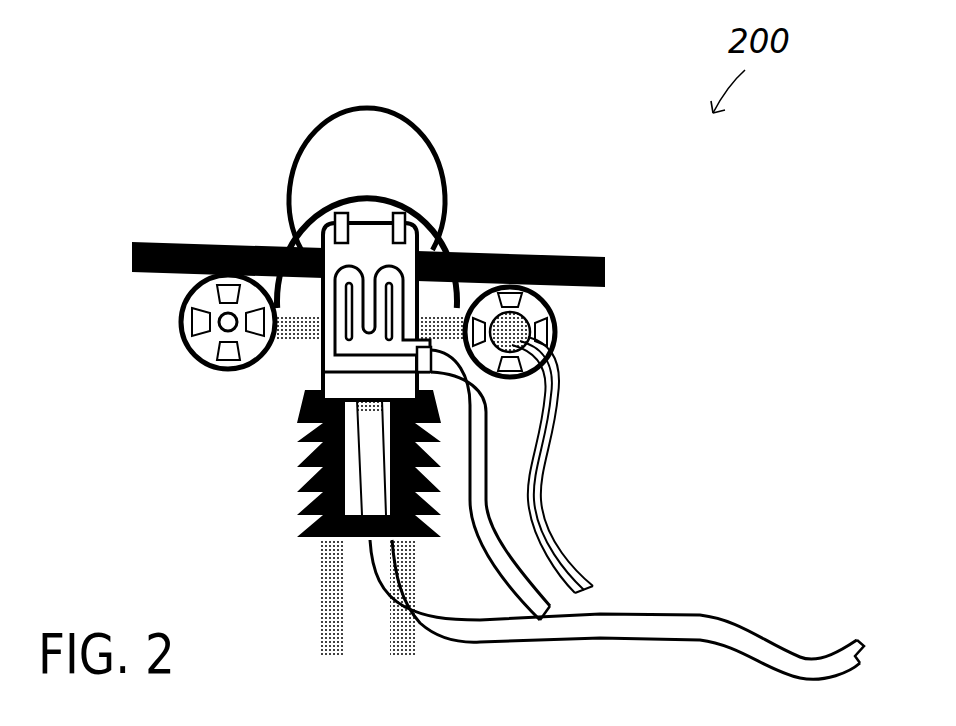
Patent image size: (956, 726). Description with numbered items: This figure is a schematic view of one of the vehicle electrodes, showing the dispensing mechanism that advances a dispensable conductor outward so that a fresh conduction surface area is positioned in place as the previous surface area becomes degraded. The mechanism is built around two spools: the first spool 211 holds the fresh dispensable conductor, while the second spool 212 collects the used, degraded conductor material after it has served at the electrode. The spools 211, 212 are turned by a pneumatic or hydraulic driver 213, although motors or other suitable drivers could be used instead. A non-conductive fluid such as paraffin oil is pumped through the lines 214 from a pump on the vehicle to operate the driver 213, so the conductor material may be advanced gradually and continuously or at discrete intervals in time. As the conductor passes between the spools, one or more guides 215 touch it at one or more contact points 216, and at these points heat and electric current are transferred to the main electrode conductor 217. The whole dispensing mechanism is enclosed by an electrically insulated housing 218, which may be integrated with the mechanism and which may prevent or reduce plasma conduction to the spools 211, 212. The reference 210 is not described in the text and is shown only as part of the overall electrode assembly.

The housing 210 is at (433, 237).
The first spool 211 is at (230, 350).
The second spool 212 is at (535, 308).
The pneumatic or hydraulic driver 213 is at (536, 333).
The lines 214 is at (542, 378).
The guides 215 is at (347, 195).
The contact points 216 is at (350, 228).
The main electrode conductor 217 is at (313, 370).
The electrically insulated housing 218 is at (607, 270).